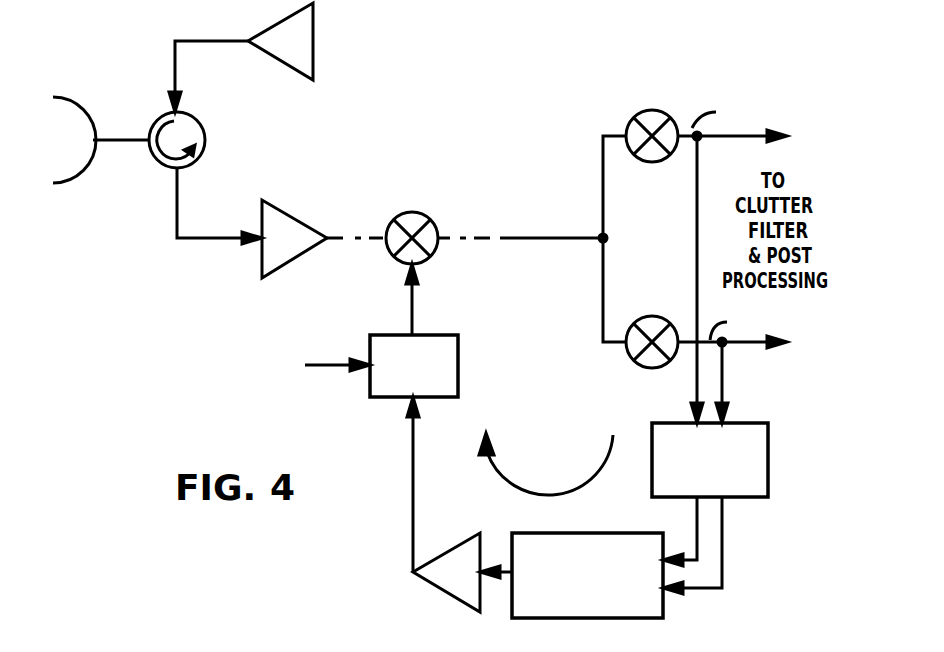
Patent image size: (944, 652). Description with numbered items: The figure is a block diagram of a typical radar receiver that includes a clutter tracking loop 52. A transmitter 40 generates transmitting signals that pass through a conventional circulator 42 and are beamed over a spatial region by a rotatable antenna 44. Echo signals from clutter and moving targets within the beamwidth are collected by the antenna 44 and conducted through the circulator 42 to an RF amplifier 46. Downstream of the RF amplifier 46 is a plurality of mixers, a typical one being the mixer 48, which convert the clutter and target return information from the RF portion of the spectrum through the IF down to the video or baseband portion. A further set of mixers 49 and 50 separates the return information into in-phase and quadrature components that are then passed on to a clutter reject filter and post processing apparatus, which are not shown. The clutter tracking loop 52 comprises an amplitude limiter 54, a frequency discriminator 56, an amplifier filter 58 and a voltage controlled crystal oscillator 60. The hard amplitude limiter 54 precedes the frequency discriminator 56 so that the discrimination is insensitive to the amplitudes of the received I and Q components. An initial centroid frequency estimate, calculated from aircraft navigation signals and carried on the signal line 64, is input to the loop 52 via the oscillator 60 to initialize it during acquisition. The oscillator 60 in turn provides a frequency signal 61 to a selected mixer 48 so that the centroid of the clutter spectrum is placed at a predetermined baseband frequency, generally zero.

The transmitter 40 is at (313, 30).
The circulator 42 is at (194, 118).
The rotatable antenna 44 is at (64, 100).
The RF amplifier 46 is at (303, 224).
The mixer 48 is at (414, 212).
The mixer 49 is at (648, 112).
The mixer 50 is at (655, 316).
The clutter tracking loop 52 is at (560, 387).
The amplitude limiter 54 is at (768, 477).
The frequency discriminator 56 is at (650, 618).
The amplifier filter 58 is at (451, 594).
The voltage controlled crystal oscillator 60 is at (434, 399).
The frequency signal 61 is at (411, 306).
The initial or acquisition frequency signal 64 is at (332, 365).